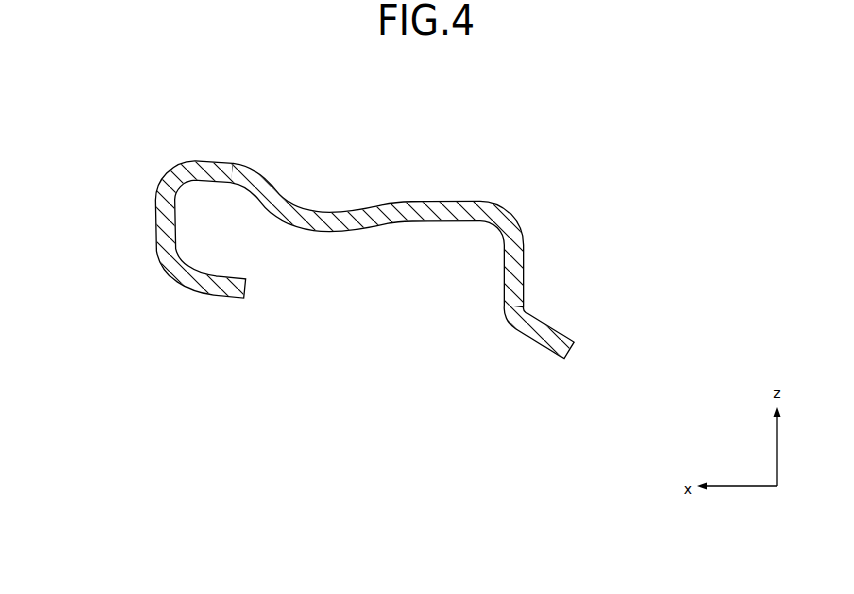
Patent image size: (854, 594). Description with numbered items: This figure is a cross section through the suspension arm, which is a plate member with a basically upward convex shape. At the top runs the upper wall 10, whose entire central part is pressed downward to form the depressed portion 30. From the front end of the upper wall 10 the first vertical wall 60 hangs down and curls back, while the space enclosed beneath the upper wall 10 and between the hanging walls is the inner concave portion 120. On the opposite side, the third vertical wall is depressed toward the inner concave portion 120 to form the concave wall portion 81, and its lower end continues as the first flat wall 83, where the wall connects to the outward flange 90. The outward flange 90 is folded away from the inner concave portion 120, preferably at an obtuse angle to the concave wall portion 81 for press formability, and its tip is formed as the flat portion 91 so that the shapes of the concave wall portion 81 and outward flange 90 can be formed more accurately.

The upper wall 10 is at (216, 162).
The depressed portion 30 is at (342, 212).
The first vertical wall 60 is at (130, 212).
The concave wall portion 81 is at (640, 242).
The first flat wall 83 is at (526, 292).
The outward flange 90 is at (587, 312).
The flat portion 91 is at (558, 332).
The inner concave portion 120 is at (374, 289).